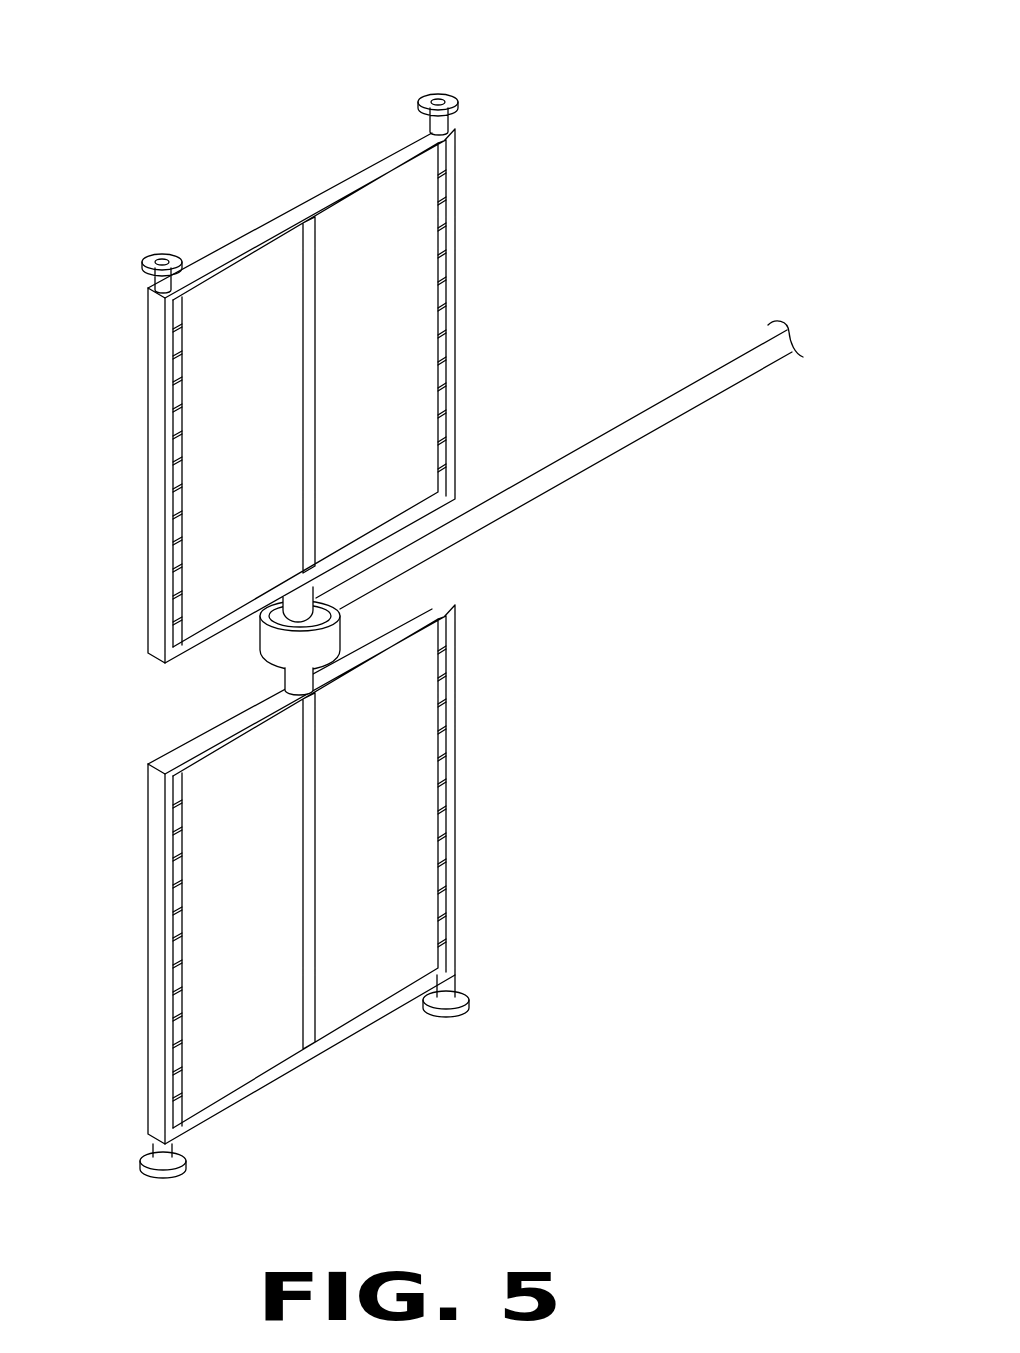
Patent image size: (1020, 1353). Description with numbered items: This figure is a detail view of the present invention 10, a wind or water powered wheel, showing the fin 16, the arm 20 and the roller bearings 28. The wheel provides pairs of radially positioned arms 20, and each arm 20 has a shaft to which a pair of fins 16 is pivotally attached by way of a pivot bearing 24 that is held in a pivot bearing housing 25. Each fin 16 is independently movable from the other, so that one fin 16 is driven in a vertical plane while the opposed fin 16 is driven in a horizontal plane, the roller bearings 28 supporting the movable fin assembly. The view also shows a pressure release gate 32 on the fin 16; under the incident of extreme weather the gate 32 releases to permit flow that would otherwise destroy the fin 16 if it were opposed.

The present invention 10 is at (438, 589).
The fin 16 is at (394, 619).
The arm 20 is at (640, 432).
The pivot bearing 24 is at (323, 618).
The pivot bearing housing 25 is at (315, 650).
The roller bearings 28 is at (187, 1157).
The pressure release gate 32 is at (212, 417).